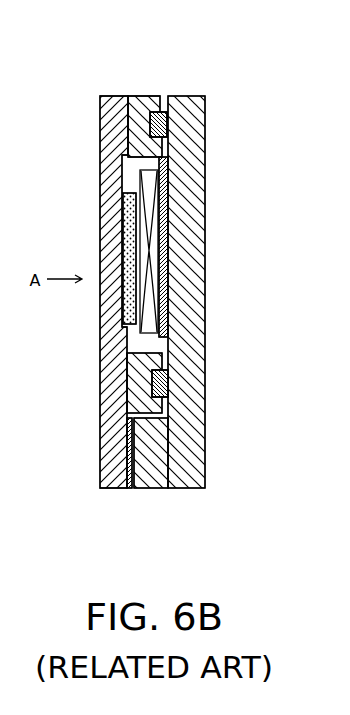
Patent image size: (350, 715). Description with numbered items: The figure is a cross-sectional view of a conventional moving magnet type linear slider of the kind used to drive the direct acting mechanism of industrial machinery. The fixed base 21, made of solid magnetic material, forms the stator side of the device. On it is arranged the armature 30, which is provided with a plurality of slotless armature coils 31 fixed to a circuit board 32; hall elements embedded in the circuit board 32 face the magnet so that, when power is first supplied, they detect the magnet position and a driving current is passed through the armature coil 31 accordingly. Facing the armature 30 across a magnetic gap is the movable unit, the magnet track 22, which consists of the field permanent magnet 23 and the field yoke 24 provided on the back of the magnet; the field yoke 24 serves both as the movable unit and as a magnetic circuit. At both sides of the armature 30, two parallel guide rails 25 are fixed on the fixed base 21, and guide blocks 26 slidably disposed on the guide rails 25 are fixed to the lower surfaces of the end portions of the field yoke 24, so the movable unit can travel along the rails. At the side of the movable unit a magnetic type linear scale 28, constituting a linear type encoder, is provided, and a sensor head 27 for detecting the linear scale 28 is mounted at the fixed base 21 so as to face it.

The fixed base 21 is at (170, 97).
The magnet track 22 is at (54, 105).
The field permanent magnet 23 is at (134, 160).
The field yoke 24 is at (124, 205).
The guide rail 25 is at (162, 121).
The guide block 26 is at (140, 115).
The sensor head 27 is at (148, 455).
The linear scale 28 is at (128, 490).
The armature 30 is at (263, 223).
The armature coil 31 is at (157, 288).
The circuit board 32 is at (164, 240).